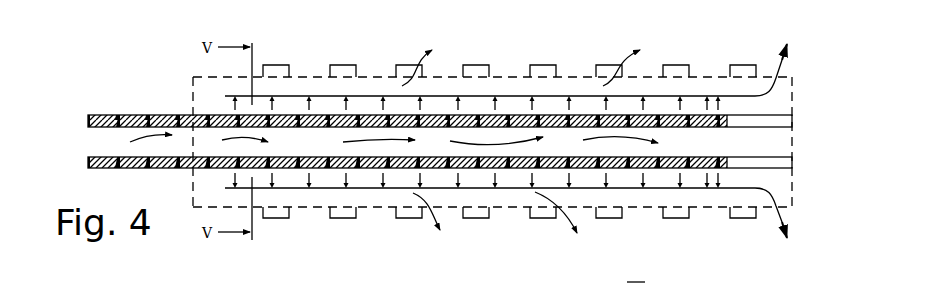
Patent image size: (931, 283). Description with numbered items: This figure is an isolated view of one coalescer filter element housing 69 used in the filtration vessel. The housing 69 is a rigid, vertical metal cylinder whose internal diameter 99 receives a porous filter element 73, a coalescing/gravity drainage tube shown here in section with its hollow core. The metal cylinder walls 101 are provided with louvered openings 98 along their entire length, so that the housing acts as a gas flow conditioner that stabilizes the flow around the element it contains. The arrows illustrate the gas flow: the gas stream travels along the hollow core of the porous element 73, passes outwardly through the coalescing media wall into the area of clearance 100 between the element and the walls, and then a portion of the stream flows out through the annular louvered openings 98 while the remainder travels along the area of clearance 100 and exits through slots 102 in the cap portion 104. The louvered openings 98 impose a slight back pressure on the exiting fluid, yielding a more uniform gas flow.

The coalescer filter element housing 69 is at (440, 66).
The porous filter element 73 is at (587, 168).
The louvered openings 98 is at (546, 66).
The internal diameter 99 is at (692, 80).
The area of clearance 100 is at (327, 97).
The metal cylinder walls 101 is at (314, 207).
The slots 102 is at (788, 208).
The cap portion 104 is at (788, 76).